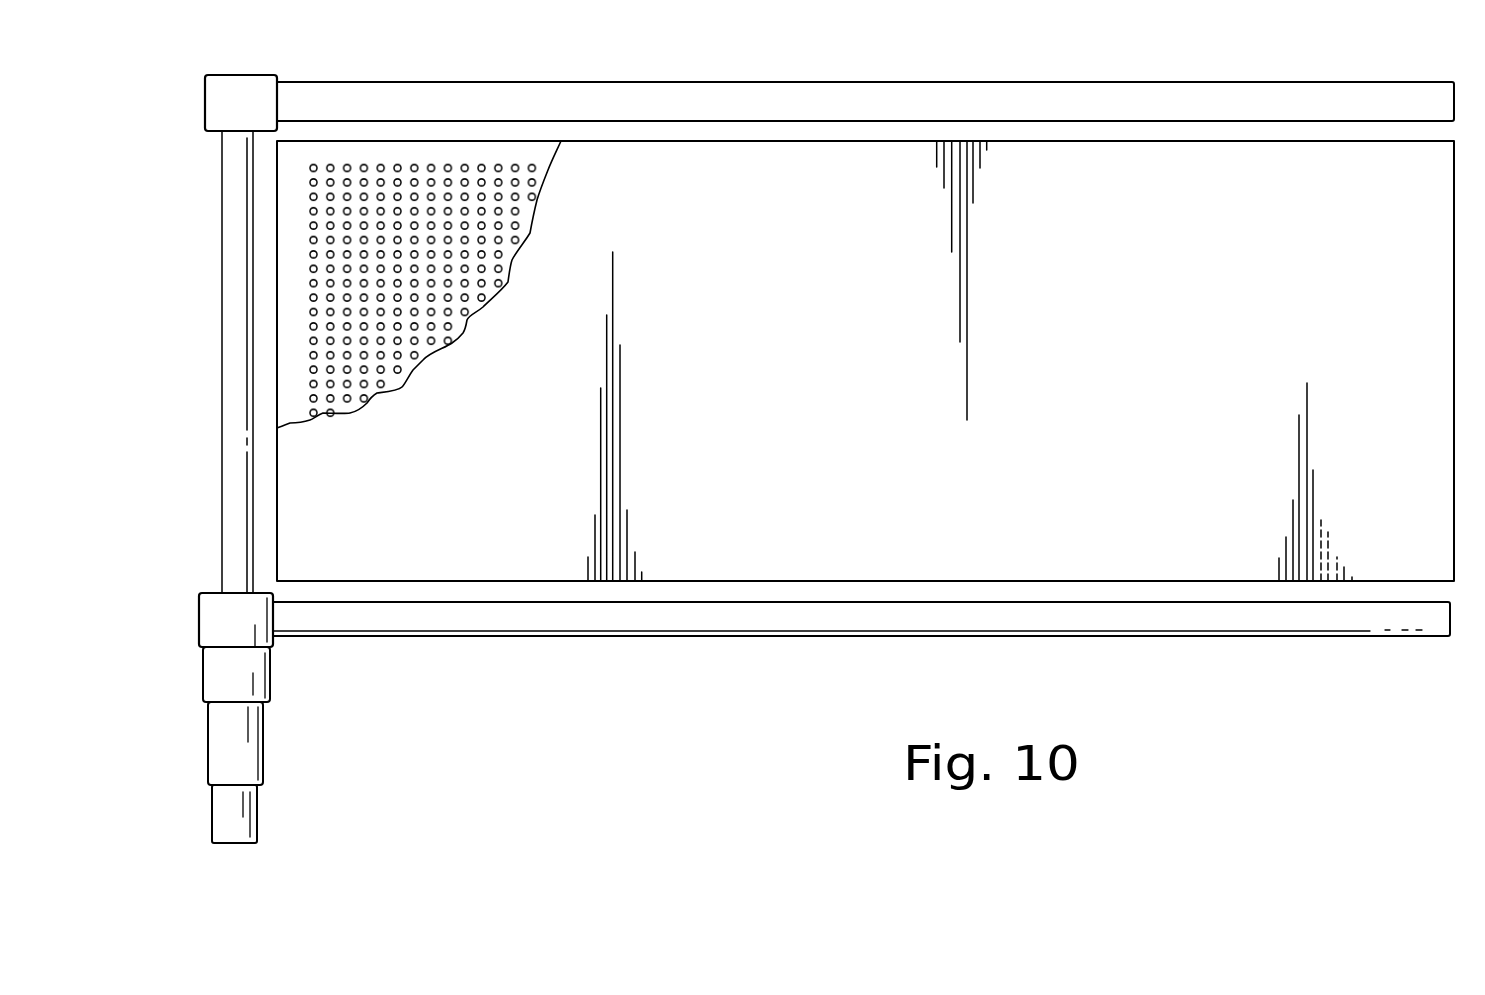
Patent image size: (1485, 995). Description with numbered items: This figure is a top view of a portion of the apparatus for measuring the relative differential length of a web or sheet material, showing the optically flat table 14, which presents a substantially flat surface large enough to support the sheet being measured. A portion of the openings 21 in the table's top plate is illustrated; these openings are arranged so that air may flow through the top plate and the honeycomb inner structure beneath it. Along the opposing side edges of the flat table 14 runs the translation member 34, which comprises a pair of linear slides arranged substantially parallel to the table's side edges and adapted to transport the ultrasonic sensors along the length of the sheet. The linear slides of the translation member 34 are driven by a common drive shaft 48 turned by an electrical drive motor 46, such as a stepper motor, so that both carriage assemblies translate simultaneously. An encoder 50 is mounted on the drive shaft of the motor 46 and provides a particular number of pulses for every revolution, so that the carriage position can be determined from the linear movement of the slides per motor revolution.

The flat table 14 is at (1207, 548).
The openings 21 is at (480, 168).
The translation member 34 is at (897, 105).
The electrical drive motor 46 is at (233, 733).
The common drive shaft 48 is at (230, 392).
The encoder 50 is at (235, 812).